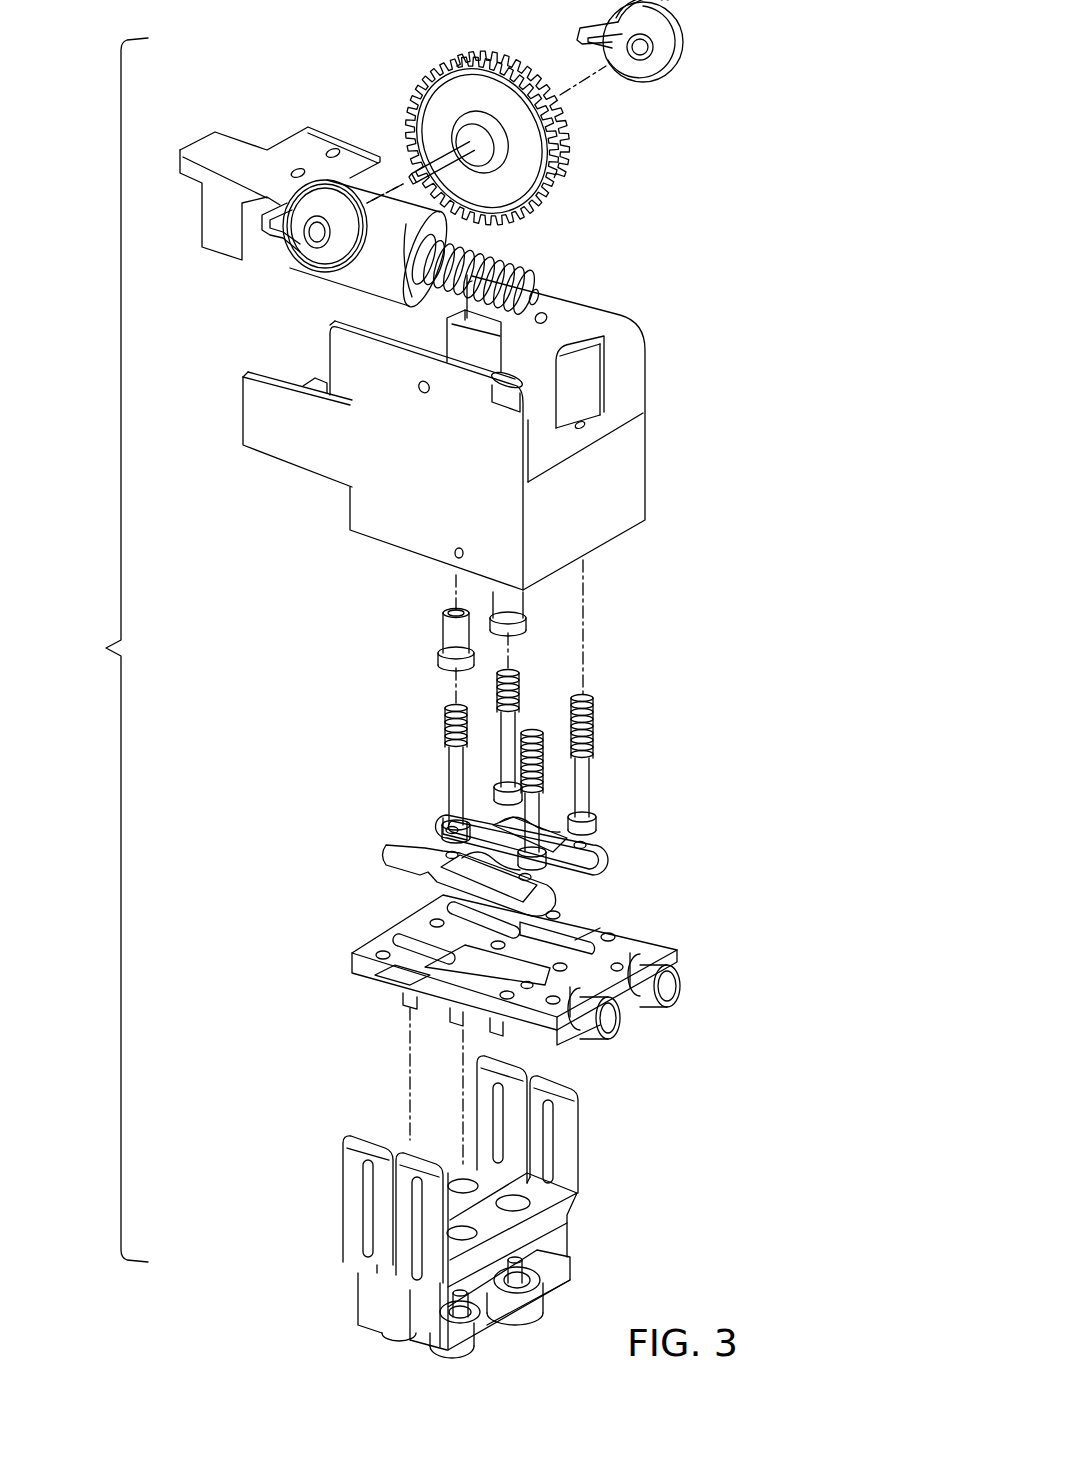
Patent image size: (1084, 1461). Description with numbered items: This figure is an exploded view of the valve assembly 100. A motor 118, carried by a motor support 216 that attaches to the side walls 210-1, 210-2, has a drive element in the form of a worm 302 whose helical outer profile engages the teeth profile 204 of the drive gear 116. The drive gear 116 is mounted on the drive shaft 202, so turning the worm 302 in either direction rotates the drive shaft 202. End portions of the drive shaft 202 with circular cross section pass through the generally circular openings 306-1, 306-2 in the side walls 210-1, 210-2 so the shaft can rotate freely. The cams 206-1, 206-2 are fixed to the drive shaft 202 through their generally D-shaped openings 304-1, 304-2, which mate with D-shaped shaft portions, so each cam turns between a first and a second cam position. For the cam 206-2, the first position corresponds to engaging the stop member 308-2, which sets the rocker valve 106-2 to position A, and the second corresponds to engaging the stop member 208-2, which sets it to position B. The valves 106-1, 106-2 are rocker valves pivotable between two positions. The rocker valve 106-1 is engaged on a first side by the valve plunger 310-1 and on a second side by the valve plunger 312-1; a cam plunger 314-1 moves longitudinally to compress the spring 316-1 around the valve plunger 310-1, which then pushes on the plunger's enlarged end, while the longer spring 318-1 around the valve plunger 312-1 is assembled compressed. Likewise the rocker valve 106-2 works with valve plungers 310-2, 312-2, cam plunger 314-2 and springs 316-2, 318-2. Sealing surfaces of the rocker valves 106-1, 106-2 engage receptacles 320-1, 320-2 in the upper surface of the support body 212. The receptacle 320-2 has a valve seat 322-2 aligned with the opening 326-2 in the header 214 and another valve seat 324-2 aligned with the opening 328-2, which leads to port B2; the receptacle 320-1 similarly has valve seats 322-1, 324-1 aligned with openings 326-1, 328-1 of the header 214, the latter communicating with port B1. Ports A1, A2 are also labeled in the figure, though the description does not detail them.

The valve assembly 100 is at (105, 650).
The rocker valve 106-1 is at (553, 892).
The rocker valve 106-2 is at (600, 855).
The drive gear 116 is at (510, 180).
The motor 118 is at (303, 273).
The drive shaft 202 is at (417, 173).
The teeth profile 204 is at (517, 217).
The cam 206-1 is at (300, 205).
The cam 206-2 is at (643, 27).
The stop member 208-2 is at (460, 352).
The side wall 210-1 is at (380, 523).
The side wall 210-2 is at (622, 338).
The support body 212 is at (630, 950).
The header 214 is at (585, 1240).
The motor support 216 is at (273, 443).
The worm 302 is at (497, 267).
The opening 304-1 is at (310, 230).
The opening 304-2 is at (653, 76).
The opening 306-1 is at (420, 382).
The opening 306-2 is at (541, 312).
The stop member 308-2 is at (590, 370).
The valve plunger 310-1 is at (452, 763).
The valve plunger 310-2 is at (503, 750).
The valve plunger 312-1 is at (595, 800).
The valve plunger 312-2 is at (543, 805).
The cam plunger 314-1 is at (450, 633).
The cam plunger 314-2 is at (520, 607).
The spring 316-1 is at (447, 718).
The spring 316-2 is at (520, 690).
The spring 318-1 is at (543, 768).
The spring 318-2 is at (593, 718).
The receptacle 320-1 is at (418, 968).
The receptacle 320-2 is at (615, 930).
The valve seat 322-1 is at (435, 945).
The valve seat 322-2 is at (470, 910).
The valve seat 324-1 is at (560, 1035).
The valve seat 324-2 is at (585, 937).
The opening 326-1 is at (418, 1217).
The opening 326-2 is at (470, 1183).
The opening 328-1 is at (515, 1210).
The opening 328-2 is at (562, 1215).
The first inlet port A1 is at (617, 1030).
The second inlet port A2 is at (680, 990).
The port B1 is at (477, 1343).
The port B2 is at (530, 1315).